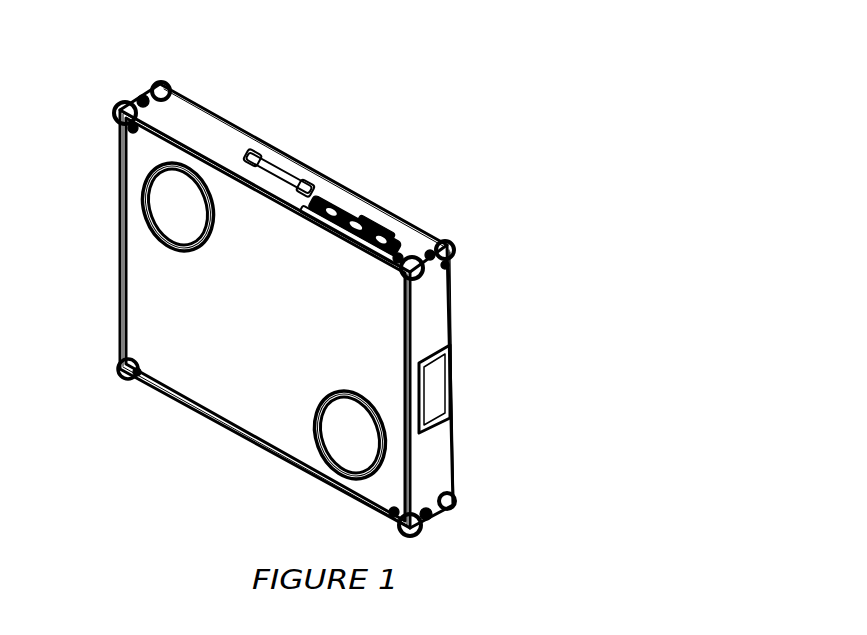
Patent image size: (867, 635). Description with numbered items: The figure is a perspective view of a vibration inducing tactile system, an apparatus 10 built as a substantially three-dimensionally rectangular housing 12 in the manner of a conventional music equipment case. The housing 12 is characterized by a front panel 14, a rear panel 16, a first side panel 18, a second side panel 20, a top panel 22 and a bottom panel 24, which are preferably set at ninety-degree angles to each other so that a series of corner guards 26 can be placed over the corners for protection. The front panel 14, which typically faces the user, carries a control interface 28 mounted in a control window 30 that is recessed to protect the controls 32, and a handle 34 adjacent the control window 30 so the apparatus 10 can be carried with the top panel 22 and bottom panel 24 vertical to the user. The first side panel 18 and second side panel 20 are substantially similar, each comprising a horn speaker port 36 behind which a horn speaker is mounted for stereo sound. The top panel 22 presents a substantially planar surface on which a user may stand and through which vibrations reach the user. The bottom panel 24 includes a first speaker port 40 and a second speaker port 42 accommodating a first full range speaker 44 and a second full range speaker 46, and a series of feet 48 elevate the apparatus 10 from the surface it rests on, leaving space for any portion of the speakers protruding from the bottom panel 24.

The apparatus 10 is at (478, 50).
The housing 12 is at (283, 150).
The front panel 14 is at (214, 132).
The rear panel 16 is at (229, 462).
The first side panel 18 is at (91, 210).
The second side panel 20 is at (437, 470).
The top panel 22 is at (477, 293).
The bottom panel 24 is at (272, 334).
The corner guards 26 is at (163, 82).
The control interface 28 is at (378, 222).
The control window 30 is at (345, 200).
The controls 32 is at (327, 218).
The handle 34 is at (306, 168).
The horn speaker port 36 is at (452, 370).
The first speaker port 40 is at (177, 250).
The second speaker port 42 is at (344, 390).
The first full range speaker 44 is at (193, 216).
The second full range speaker 46 is at (359, 446).
The feet 48 is at (118, 135).